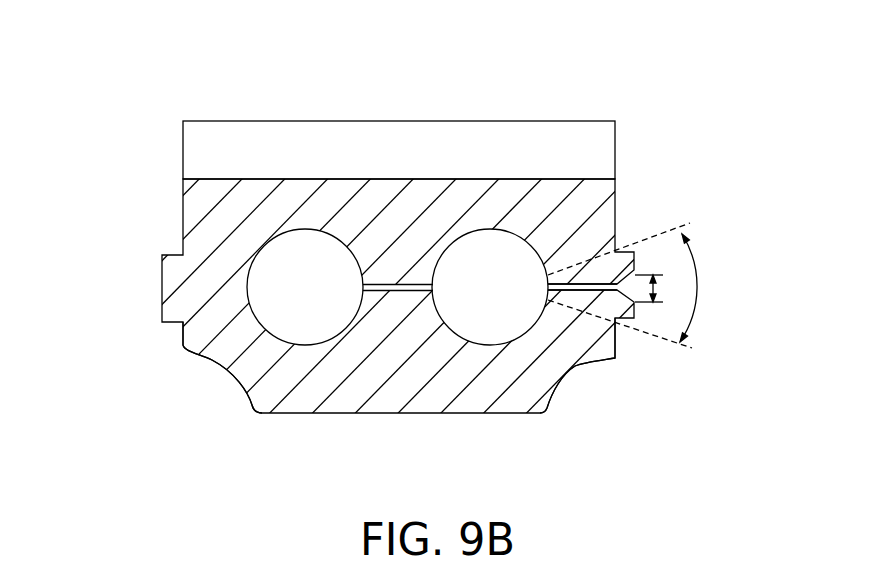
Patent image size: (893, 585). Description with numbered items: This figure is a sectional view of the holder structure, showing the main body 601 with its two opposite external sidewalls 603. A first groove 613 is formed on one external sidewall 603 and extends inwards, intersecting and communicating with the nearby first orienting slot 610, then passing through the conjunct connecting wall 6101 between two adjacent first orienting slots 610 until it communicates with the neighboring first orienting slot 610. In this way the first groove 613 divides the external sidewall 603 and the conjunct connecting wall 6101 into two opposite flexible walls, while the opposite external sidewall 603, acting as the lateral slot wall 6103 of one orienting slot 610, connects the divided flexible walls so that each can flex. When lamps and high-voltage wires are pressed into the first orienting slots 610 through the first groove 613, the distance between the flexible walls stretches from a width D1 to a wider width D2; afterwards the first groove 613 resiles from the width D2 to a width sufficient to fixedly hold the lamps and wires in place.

The main body 601 is at (548, 410).
The external sidewall 603 is at (183, 226).
The first orienting slot 610 is at (283, 347).
The conjunct connecting wall 6101 is at (397, 291).
The lateral slot wall 6103 is at (193, 351).
The first groove 613 is at (398, 284).
The width D1 is at (657, 288).
The wider width D2 is at (638, 285).